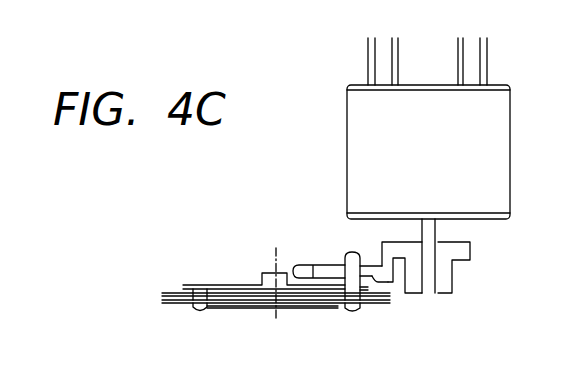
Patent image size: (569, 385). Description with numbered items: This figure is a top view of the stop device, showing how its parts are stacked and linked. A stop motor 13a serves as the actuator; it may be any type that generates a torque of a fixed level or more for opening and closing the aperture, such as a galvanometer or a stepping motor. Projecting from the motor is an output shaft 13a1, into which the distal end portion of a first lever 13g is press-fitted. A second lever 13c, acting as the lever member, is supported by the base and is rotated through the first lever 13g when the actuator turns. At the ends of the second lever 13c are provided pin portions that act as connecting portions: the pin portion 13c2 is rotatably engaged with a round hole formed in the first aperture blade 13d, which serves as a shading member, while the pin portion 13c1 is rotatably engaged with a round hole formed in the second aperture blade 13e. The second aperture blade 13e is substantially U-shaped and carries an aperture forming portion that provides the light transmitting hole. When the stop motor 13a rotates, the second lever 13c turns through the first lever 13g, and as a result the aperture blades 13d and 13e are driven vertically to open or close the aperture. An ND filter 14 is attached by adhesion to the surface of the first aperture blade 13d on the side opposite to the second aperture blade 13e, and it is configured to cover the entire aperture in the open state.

The stop motor 13a is at (358, 133).
The output shaft 13a1 is at (430, 236).
The first lever 13g is at (413, 288).
The second lever 13c is at (233, 285).
The pin portion 13c1 is at (352, 308).
The pin portion 13c2 is at (198, 313).
The second aperture blade 13e is at (172, 287).
The first aperture blade 13d is at (172, 304).
The ND filter 14 is at (313, 303).